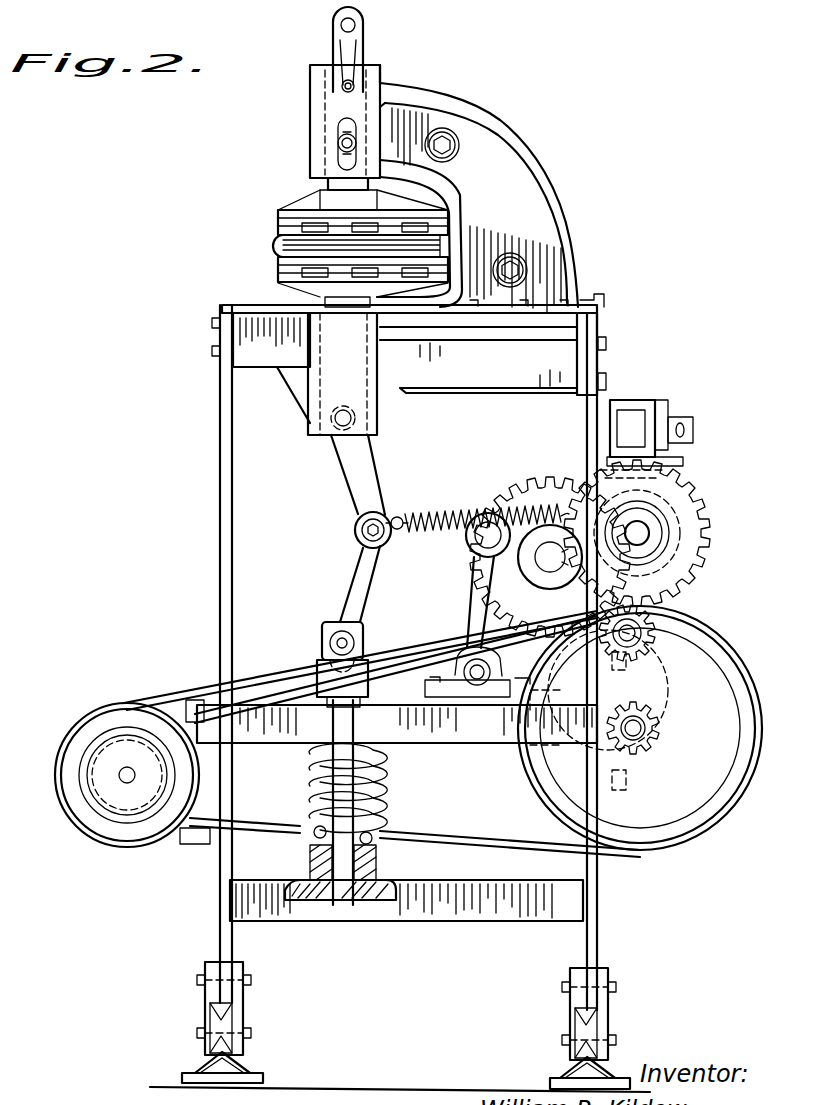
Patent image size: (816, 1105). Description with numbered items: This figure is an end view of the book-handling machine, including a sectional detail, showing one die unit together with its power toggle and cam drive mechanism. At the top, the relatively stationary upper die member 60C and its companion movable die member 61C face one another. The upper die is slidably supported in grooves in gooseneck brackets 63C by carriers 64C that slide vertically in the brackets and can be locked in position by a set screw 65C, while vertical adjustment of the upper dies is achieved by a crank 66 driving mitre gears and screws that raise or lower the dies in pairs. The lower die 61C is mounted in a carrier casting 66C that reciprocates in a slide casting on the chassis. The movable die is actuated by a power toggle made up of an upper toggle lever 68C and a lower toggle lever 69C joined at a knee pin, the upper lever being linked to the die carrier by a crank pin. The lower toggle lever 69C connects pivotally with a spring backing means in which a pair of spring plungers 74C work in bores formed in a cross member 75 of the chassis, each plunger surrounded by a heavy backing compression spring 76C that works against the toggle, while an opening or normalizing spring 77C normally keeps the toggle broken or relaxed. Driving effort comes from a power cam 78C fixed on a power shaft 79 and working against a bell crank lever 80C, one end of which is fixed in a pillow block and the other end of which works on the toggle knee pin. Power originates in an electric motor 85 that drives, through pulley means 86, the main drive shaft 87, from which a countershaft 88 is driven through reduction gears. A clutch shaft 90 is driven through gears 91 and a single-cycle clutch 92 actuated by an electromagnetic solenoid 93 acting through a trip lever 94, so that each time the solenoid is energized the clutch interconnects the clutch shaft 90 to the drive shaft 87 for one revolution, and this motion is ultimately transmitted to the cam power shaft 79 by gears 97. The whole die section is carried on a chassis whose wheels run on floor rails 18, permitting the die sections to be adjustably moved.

The floor rails 18 is at (245, 1062).
The upper die member 60C is at (290, 228).
The movable die member 61C is at (290, 265).
The gooseneck brackets 63C is at (520, 160).
The carriers 64C is at (330, 183).
The set screw 65C is at (340, 143).
The crank 66 is at (355, 45).
The carrier casting 66C is at (372, 377).
The upper toggle lever 68C is at (363, 465).
The lower toggle lever 69C is at (355, 570).
The spring plungers 74C is at (365, 865).
The cross member 75 is at (453, 745).
The backing compression spring 76C is at (372, 795).
The normalizing spring 77C is at (450, 483).
The power cam 78C is at (540, 600).
The power shaft 79 is at (540, 559).
The bell crank lever 80C is at (475, 630).
The electric motor 85 is at (95, 830).
The pulley means 86 is at (628, 848).
The main drive shaft 87 is at (640, 733).
The countershaft 88 is at (688, 623).
The clutch shaft 90 is at (645, 531).
The gears 91 is at (700, 560).
The single-cycle clutch 92 is at (698, 534).
The electromagnetic solenoid 93 is at (628, 418).
The trip lever 94 is at (690, 437).
The gears 97 is at (533, 488).